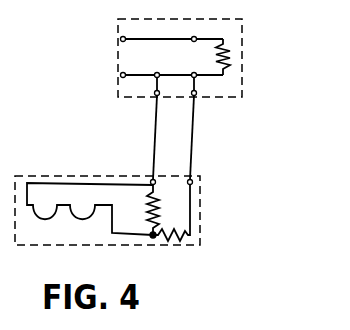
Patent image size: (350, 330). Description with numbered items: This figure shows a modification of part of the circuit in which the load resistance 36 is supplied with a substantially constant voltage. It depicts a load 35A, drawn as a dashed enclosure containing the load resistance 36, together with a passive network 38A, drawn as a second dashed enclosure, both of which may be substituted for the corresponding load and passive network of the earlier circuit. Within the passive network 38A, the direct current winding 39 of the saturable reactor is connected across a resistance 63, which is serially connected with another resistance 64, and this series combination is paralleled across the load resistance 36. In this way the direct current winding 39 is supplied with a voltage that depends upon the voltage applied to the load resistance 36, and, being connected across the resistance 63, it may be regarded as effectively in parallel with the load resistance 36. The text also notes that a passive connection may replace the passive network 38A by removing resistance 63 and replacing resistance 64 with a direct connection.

The load 35A is at (209, 99).
The load resistance 36 is at (232, 31).
The passive network 38A is at (207, 195).
The direct current winding 39 is at (41, 217).
The resistance 63 is at (165, 208).
The resistance 64 is at (164, 241).